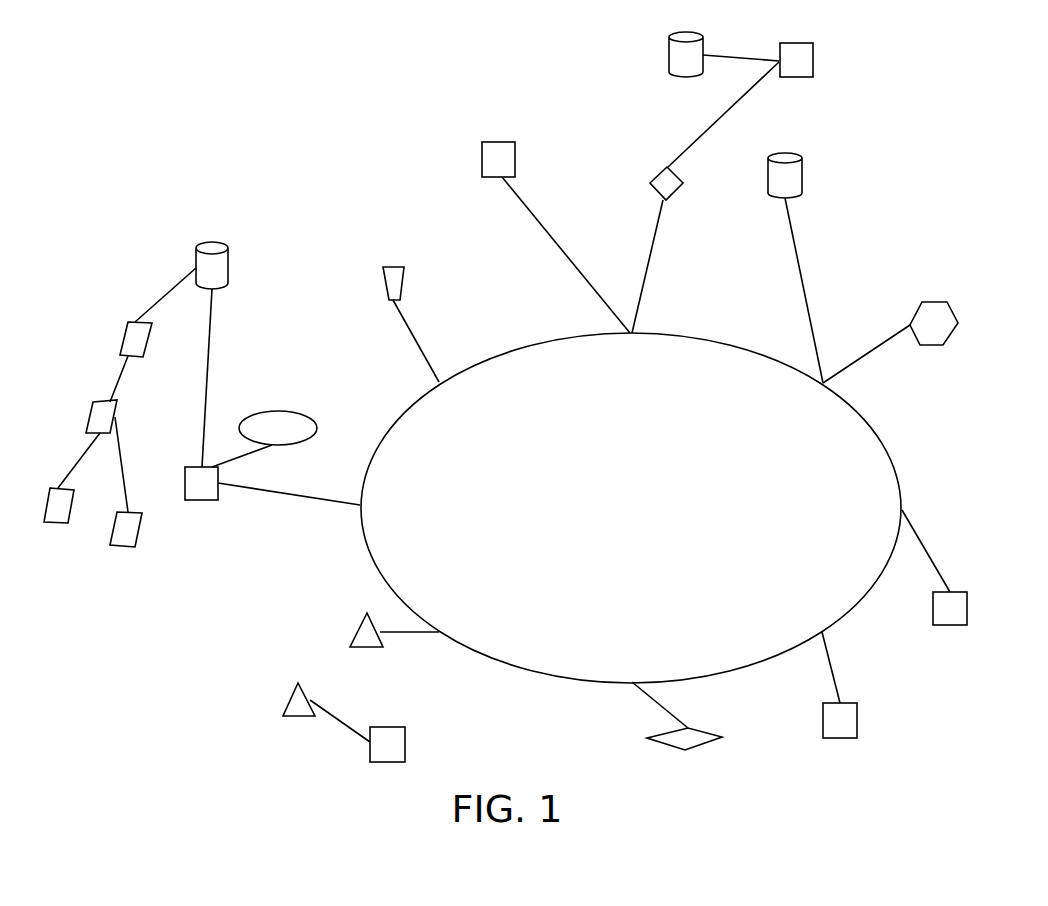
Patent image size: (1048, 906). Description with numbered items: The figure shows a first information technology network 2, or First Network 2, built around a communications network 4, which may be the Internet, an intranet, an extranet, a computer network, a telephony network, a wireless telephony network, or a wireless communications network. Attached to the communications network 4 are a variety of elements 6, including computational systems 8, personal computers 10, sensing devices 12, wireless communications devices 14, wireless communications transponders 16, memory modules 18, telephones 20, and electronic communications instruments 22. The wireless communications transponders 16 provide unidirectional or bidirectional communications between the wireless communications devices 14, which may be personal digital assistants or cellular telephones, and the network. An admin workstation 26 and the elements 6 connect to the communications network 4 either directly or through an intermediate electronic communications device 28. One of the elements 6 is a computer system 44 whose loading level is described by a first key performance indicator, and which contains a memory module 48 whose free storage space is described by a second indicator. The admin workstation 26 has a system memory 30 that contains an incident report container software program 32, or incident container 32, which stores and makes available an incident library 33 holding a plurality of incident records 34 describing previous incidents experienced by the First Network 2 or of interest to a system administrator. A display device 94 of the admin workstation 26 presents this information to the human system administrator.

The first information technology network 2 is at (112, 114).
The communications network 4 is at (366, 147).
The elements 6 is at (813, 58).
The computational systems 8 is at (953, 592).
The personal computers 10 is at (857, 718).
The sensing devices 12 is at (498, 143).
The wireless communications devices 14 is at (405, 743).
The wireless communications transponders 16 is at (358, 628).
The memory modules 18 is at (802, 177).
The telephones 20 is at (687, 750).
The electronic communications instruments 22 is at (403, 283).
The admin workstation 26 is at (200, 500).
The intermediate electronic communications device 28 is at (650, 183).
The system memory 30 is at (229, 262).
The incident report container software program 32 is at (122, 338).
The incident library 33 is at (90, 415).
The incident records 34 is at (60, 523).
The computer system 44 is at (795, 77).
The memory module 48 is at (668, 53).
The display device 94 is at (303, 415).